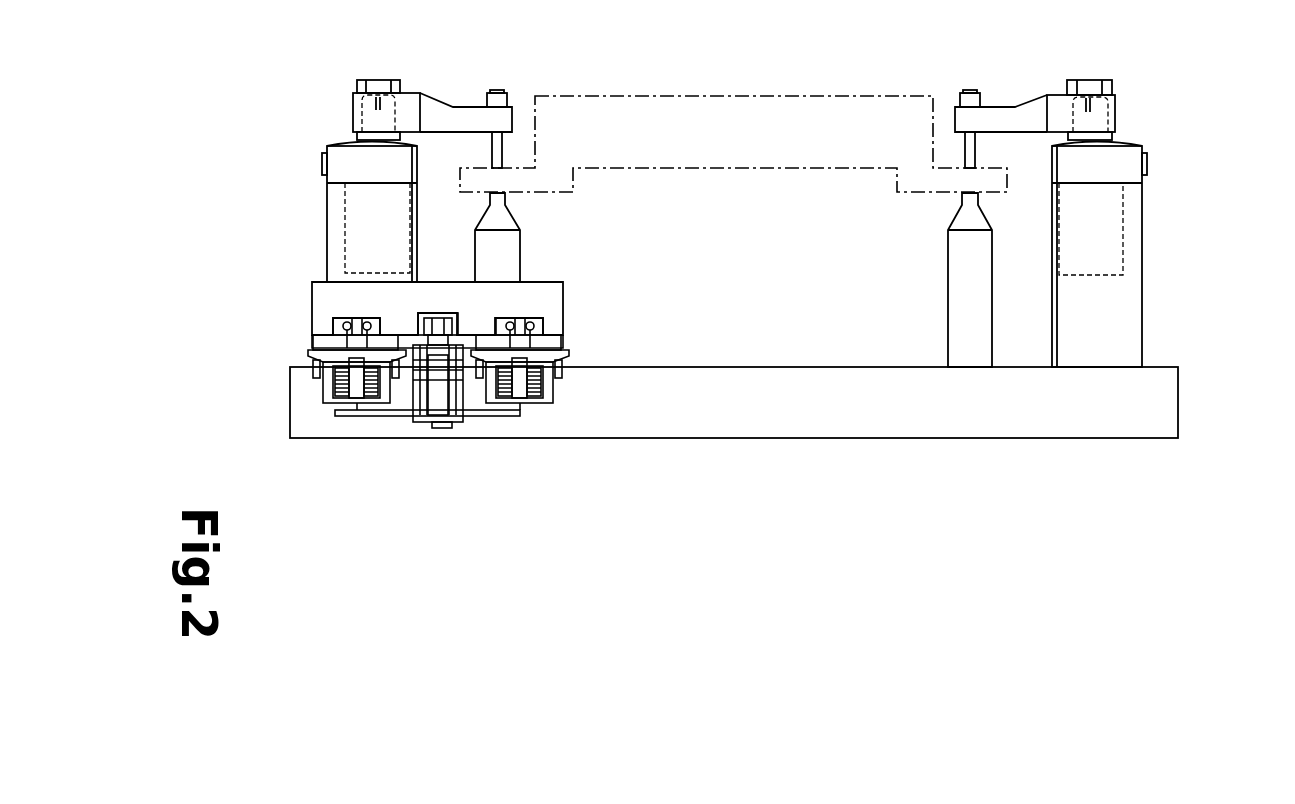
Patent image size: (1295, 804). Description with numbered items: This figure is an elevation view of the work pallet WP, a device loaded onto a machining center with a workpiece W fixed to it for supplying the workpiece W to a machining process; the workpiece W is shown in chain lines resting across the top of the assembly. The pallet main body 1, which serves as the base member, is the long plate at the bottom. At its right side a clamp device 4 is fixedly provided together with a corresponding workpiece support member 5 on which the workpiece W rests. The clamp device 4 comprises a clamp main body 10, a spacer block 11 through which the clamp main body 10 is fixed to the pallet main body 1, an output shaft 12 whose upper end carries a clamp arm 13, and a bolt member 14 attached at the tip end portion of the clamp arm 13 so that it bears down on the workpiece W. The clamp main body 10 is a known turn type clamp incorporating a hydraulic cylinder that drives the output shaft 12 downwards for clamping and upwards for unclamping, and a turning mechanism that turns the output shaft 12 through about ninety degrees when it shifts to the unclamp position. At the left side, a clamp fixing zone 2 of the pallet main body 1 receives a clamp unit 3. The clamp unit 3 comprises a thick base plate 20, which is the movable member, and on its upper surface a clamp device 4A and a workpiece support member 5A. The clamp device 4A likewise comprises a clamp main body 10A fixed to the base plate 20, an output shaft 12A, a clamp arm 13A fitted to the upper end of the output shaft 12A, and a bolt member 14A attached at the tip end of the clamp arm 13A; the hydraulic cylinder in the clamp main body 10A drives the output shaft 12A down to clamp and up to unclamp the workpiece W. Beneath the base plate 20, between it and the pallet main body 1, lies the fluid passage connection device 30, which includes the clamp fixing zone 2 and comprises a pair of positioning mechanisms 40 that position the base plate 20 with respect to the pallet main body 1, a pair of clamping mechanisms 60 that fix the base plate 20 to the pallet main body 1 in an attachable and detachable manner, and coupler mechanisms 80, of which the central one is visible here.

The pallet main body 1 is at (822, 366).
The clamp fixing zone 2 is at (571, 338).
The clamp unit 3 is at (458, 375).
The clamp device 4 is at (1058, 202).
The clamp device 4A is at (415, 159).
The workpiece support member 5 is at (946, 291).
The workpiece support member 5A is at (522, 236).
The clamp main body 10 is at (1117, 229).
The clamp main body 10A is at (356, 213).
The spacer block 11 is at (1117, 322).
The output shaft 12 is at (1107, 118).
The output shaft 12A is at (360, 118).
The clamp arm 13 is at (1020, 100).
The clamp arm 13A is at (436, 98).
The bolt member 14 is at (962, 150).
The bolt member 14A is at (500, 154).
The base plate 20 is at (566, 283).
The fluid passage connection device 30 is at (417, 436).
The positioning mechanism 40 is at (417, 418).
The clamping mechanism 60 is at (322, 403).
The coupler mechanism 80 is at (413, 415).
The workpiece W is at (770, 93).
The work pallet WP is at (734, 419).